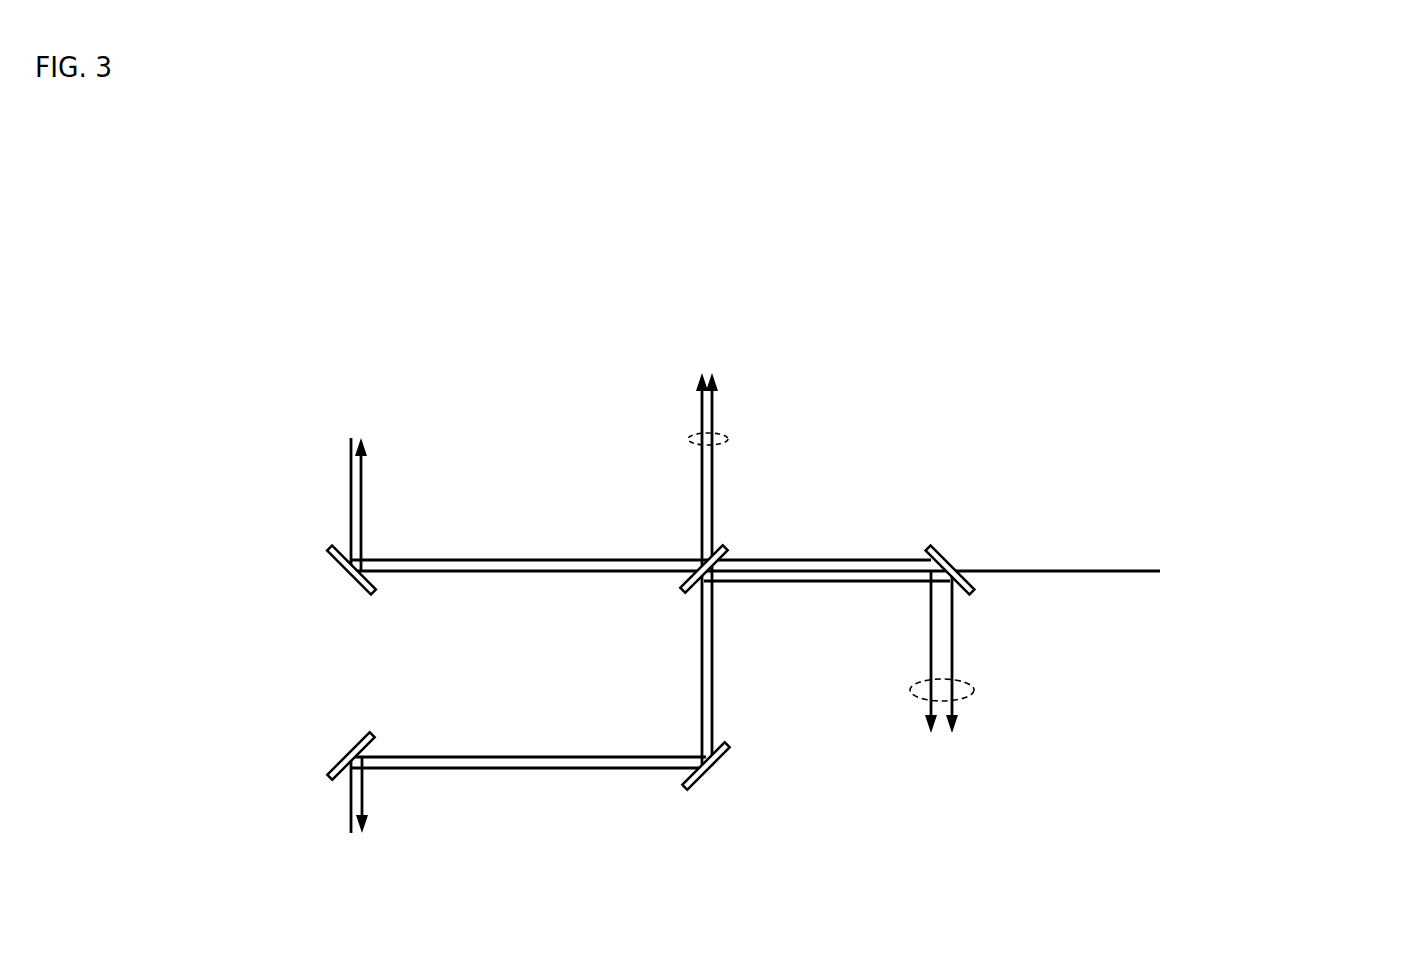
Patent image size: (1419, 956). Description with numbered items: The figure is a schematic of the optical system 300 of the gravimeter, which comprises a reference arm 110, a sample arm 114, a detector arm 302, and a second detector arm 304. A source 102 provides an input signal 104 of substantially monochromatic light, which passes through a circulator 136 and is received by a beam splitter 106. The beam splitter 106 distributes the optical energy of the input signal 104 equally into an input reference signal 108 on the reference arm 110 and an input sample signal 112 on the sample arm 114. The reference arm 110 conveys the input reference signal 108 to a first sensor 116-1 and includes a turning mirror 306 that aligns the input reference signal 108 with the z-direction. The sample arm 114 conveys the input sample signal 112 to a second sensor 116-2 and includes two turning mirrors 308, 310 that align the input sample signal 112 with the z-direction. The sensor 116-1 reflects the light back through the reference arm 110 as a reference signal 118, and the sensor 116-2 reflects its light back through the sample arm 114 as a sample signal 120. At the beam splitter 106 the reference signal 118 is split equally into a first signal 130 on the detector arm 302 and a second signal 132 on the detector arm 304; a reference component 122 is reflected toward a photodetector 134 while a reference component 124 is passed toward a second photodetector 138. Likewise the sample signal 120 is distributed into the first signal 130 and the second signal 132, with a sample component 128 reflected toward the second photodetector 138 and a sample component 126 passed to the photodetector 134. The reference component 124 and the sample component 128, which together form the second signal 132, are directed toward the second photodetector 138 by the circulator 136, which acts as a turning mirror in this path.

The optical system 300 is at (340, 194).
The detector arm 302 is at (813, 424).
The detector arm 304 is at (799, 658).
The turning mirror 306 is at (342, 567).
The turning mirror 308 is at (728, 757).
The turning mirror 310 is at (343, 757).
The source 102 is at (1290, 570).
The input signal 104 is at (1127, 568).
The beam splitter 106 is at (724, 552).
The input reference signal 108 is at (590, 573).
The reference arm 110 is at (380, 626).
The input sample signal 112 is at (590, 755).
The sample arm 114 is at (380, 696).
The sensor 116-1 is at (361, 468).
The sensor 116-2 is at (345, 832).
The reference signal 118 is at (590, 558).
The sample signal 120 is at (590, 770).
The reference component 122 is at (715, 503).
The reference component 124 is at (822, 558).
The sample component 126 is at (699, 503).
The sample component 128 is at (822, 583).
The first signal 130 is at (688, 440).
The second signal 132 is at (910, 690).
The photodetector 134 is at (788, 352).
The circulator 136 is at (958, 552).
The photodetector 138 is at (1006, 669).